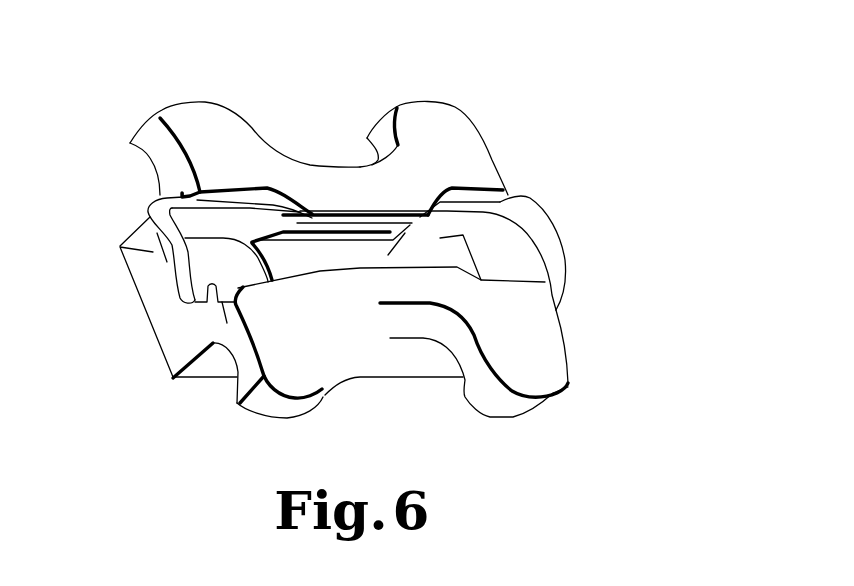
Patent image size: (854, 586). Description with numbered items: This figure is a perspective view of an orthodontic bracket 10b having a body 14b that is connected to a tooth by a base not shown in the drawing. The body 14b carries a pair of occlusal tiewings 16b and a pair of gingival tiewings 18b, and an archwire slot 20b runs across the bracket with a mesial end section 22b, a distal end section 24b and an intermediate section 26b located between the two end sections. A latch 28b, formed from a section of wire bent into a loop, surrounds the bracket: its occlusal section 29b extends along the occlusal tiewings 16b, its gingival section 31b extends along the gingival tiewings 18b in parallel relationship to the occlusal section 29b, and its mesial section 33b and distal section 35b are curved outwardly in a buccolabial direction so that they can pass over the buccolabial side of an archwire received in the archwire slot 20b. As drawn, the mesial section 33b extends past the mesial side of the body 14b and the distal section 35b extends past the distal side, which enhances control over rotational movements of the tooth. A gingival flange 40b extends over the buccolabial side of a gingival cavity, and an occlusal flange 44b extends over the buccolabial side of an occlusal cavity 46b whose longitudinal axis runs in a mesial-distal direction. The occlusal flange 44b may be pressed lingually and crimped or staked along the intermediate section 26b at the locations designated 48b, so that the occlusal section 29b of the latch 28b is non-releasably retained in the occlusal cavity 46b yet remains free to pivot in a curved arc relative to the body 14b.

The orthodontic bracket 10b is at (618, 220).
The body 14b is at (173, 340).
The occlusal tiewings 16b is at (191, 120).
The gingival tiewings 18b is at (310, 367).
The archwire slot 20b is at (486, 257).
The mesial end section 22b is at (120, 247).
The distal end section 24b is at (450, 240).
The intermediate section 26b is at (353, 233).
The latch 28b is at (572, 300).
The occlusal section 29b is at (155, 195).
The gingival section 31b is at (200, 318).
The mesial section 33b is at (183, 302).
The distal section 35b is at (533, 217).
The gingival flange 40b is at (390, 280).
The occlusal flange 44b is at (350, 210).
The occlusal cavity 46b is at (298, 214).
The staking locations 48b is at (328, 196).